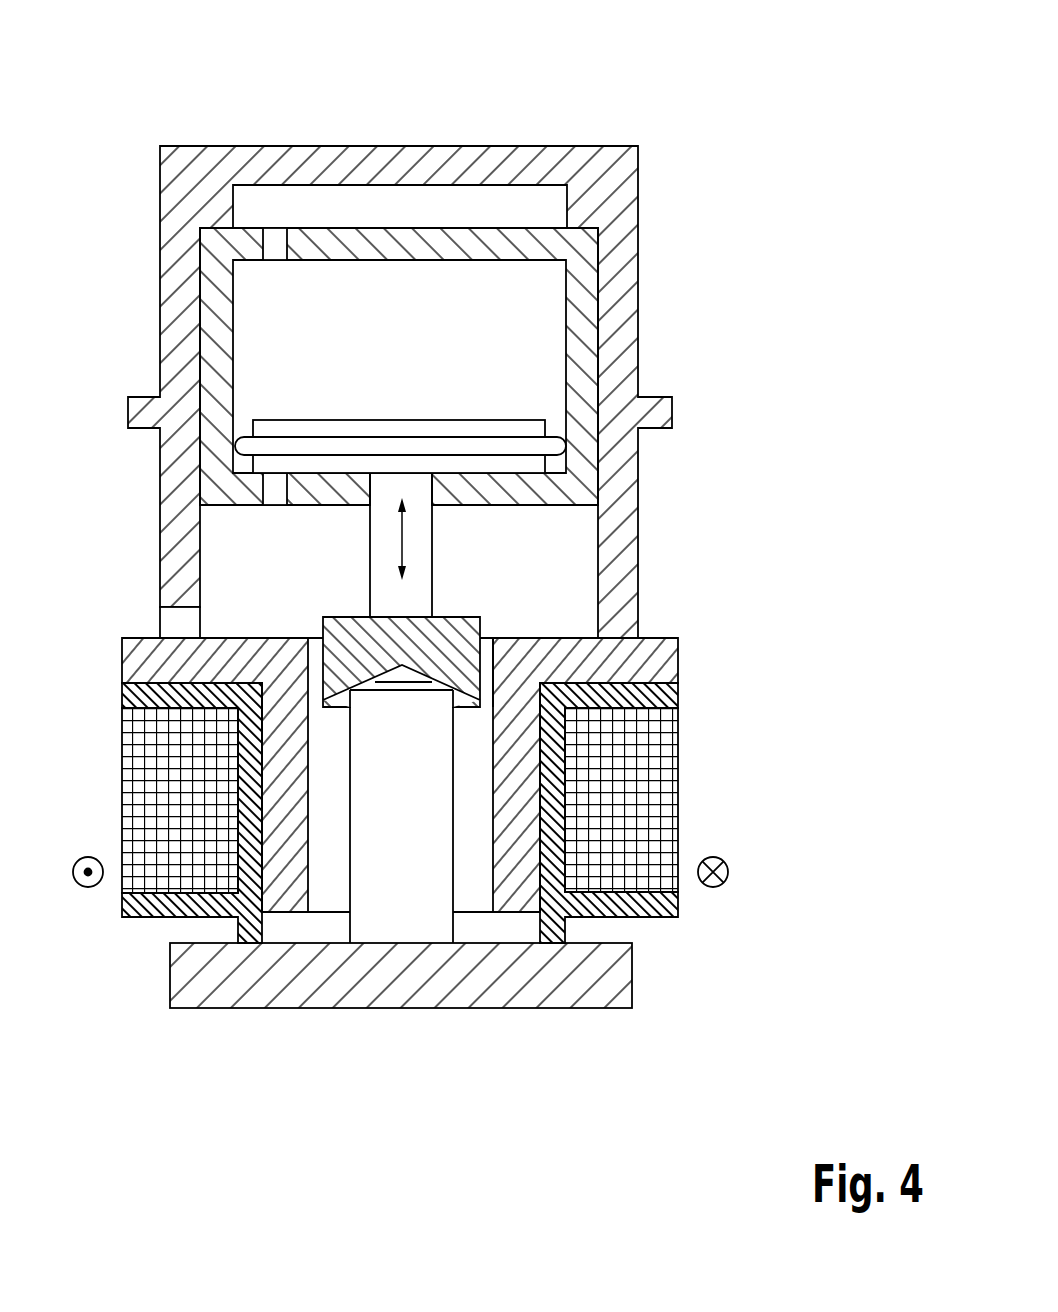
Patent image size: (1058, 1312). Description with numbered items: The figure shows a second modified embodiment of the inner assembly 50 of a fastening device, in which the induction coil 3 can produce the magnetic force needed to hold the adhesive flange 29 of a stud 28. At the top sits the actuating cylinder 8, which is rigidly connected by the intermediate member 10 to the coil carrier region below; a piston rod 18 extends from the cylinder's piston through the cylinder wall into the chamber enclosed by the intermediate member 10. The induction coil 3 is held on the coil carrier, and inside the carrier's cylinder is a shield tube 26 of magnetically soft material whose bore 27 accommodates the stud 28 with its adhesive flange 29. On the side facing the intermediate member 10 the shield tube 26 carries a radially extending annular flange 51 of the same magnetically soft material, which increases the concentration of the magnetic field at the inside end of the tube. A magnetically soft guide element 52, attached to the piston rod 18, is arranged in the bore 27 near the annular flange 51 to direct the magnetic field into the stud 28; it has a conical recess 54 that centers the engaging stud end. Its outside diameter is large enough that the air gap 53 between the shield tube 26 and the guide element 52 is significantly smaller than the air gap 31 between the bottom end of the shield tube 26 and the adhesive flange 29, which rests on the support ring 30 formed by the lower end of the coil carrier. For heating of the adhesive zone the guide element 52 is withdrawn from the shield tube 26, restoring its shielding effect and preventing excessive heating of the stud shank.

The assembly 50 is at (405, 552).
The intermediate member 10 is at (446, 392).
The actuating cylinder 8 is at (334, 366).
The piston rod 18 is at (352, 545).
The guide element 52 is at (268, 631).
The conical recess 54 is at (418, 628).
The air gap 53 is at (624, 634).
The annular flange 51 is at (357, 771).
The shield tube 26 is at (513, 797).
The bore 27 is at (608, 851).
The support ring 30 is at (373, 828).
The induction coil 3 is at (363, 800).
The stud 28 is at (402, 903).
The air gap 31 is at (306, 1005).
The adhesive flange 29 is at (472, 975).